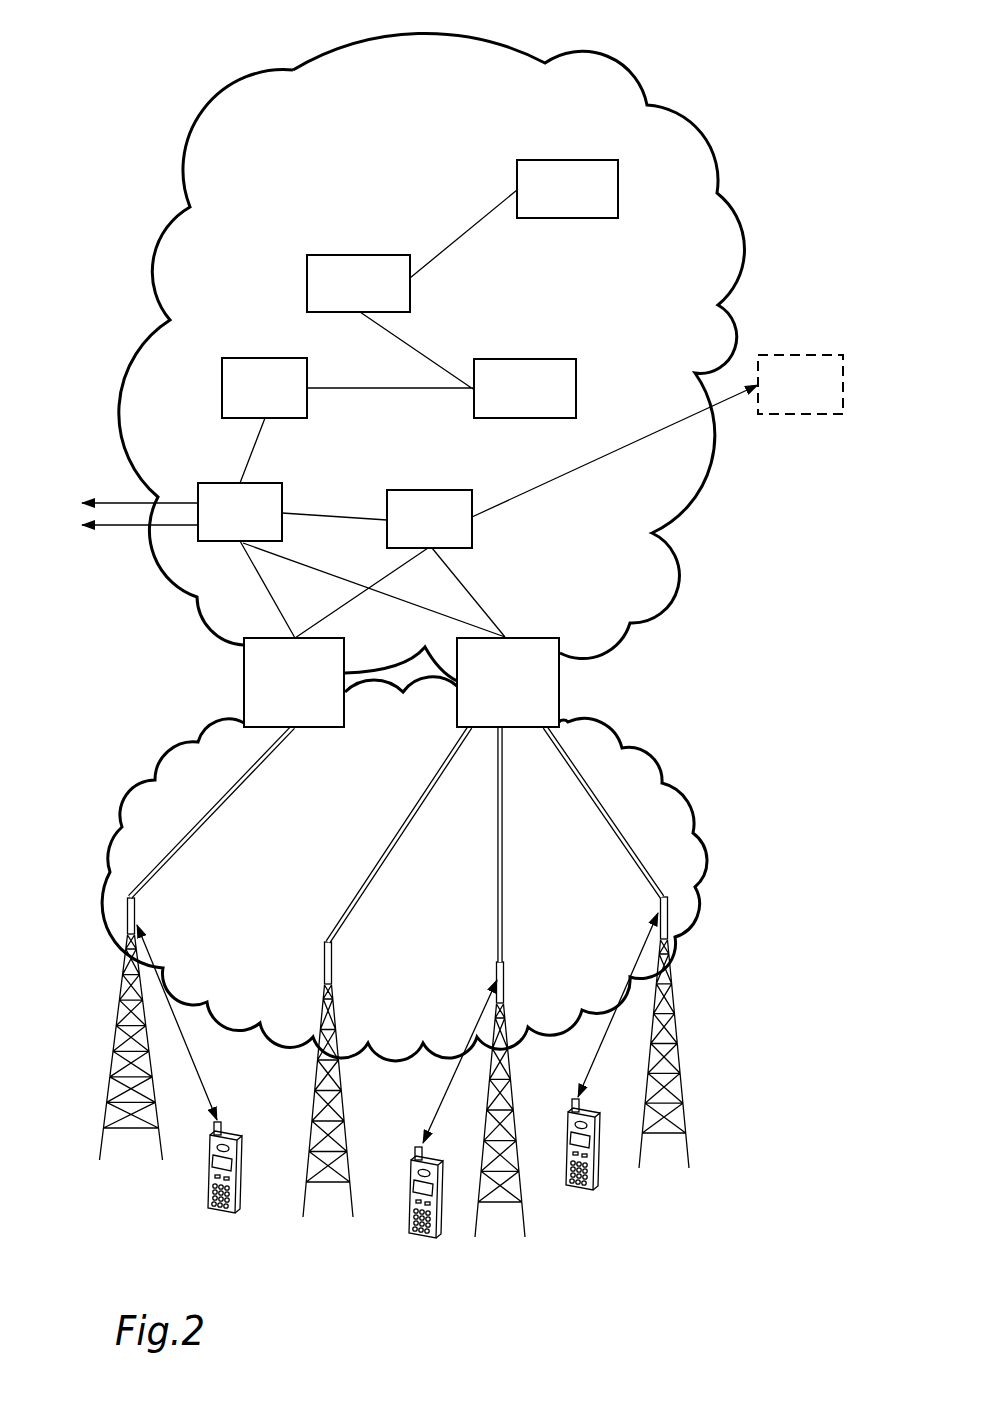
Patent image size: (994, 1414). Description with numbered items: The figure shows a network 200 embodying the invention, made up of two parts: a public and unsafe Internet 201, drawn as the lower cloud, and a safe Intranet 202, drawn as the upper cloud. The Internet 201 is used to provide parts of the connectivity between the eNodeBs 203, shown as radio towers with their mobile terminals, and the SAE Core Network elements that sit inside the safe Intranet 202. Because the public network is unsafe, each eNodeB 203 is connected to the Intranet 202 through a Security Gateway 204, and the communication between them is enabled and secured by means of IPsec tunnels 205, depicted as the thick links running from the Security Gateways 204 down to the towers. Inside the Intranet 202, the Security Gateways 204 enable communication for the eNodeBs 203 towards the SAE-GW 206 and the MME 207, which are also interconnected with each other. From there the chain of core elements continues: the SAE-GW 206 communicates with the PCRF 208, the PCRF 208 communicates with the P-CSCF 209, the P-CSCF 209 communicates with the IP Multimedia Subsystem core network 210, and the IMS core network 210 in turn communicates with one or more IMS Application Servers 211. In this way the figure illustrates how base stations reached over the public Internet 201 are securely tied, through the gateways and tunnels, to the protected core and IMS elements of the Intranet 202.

The network 200 is at (117, 100).
The Internet 201 is at (130, 787).
The Intranet 202 is at (148, 343).
The eNodeB 203 is at (92, 1122).
The Security Gateway 204 is at (401, 682).
The IPsec tunnel 205 is at (235, 795).
The SAE-GW 206 is at (182, 512).
The MME 207 is at (615, 451).
The PCRF 208 is at (264, 388).
The P-CSCF 209 is at (525, 388).
The IP Multimedia Subsystem (IMS) CN 210 is at (358, 283).
The IMS Application Server 211 is at (567, 189).